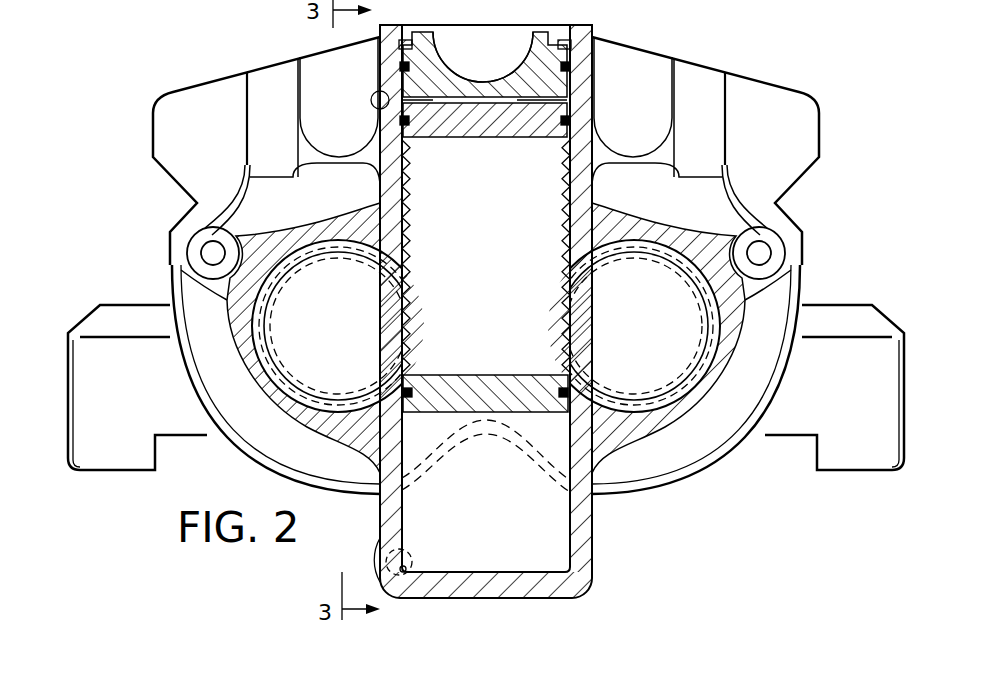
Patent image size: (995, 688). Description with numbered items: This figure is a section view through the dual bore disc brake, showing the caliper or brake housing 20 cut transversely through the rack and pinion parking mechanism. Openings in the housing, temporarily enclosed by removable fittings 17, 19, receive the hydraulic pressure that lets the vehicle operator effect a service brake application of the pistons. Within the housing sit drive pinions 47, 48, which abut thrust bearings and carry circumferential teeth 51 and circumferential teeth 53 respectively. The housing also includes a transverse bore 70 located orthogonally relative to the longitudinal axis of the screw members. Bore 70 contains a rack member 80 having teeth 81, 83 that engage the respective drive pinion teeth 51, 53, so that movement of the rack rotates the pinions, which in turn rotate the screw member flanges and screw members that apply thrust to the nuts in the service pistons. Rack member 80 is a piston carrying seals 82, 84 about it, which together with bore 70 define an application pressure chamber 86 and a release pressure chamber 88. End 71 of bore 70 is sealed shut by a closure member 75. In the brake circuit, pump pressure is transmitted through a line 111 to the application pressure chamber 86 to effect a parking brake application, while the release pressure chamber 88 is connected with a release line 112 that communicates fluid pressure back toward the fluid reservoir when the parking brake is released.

The removable fitting 17 is at (777, 234).
The removable fitting 19 is at (213, 253).
The caliper or brake housing 20 is at (741, 76).
The drive pinion 47 is at (348, 338).
The drive pinion 48 is at (650, 338).
The circumferential teeth 51 is at (270, 415).
The circumferential teeth 53 is at (667, 400).
The transverse bore 70 is at (566, 533).
The end of bore 71 is at (563, 30).
The closure member 75 is at (420, 42).
The rack member 80 is at (501, 259).
The rack teeth 81 is at (410, 216).
The seal 82 is at (558, 135).
The rack teeth 83 is at (562, 288).
The seal 84 is at (562, 376).
The application pressure chamber 86 is at (593, 58).
The release pressure chamber 88 is at (523, 555).
The line 111 is at (371, 96).
The release line 112 is at (403, 580).